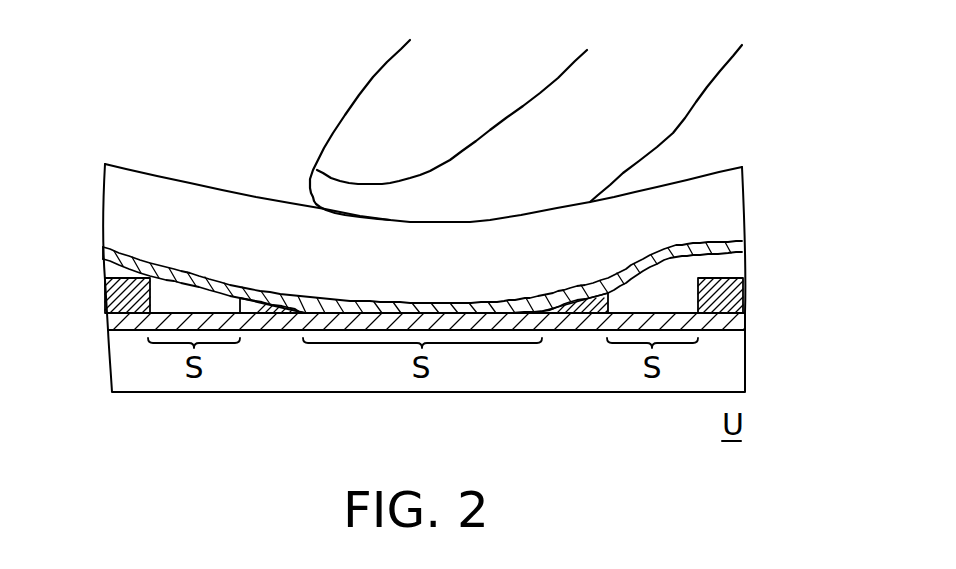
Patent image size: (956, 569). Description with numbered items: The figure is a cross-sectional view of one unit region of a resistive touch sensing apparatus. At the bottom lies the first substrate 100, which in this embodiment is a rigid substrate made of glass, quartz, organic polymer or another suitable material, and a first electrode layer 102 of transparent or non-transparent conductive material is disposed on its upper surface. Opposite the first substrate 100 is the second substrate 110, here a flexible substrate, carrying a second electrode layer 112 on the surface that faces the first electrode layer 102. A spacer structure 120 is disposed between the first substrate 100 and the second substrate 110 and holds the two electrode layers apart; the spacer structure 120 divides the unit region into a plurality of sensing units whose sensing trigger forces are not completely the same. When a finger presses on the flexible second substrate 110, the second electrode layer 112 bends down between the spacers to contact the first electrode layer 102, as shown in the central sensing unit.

The first substrate 100 is at (732, 367).
The first electrode layer 102 is at (733, 322).
The second substrate 110 is at (727, 199).
The second electrode layer 112 is at (727, 247).
The spacer structure 120 is at (107, 296).